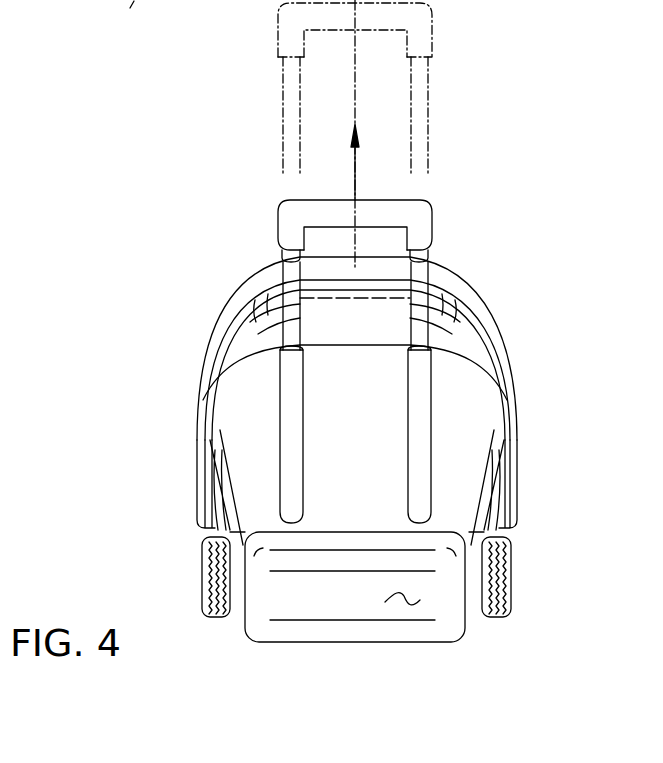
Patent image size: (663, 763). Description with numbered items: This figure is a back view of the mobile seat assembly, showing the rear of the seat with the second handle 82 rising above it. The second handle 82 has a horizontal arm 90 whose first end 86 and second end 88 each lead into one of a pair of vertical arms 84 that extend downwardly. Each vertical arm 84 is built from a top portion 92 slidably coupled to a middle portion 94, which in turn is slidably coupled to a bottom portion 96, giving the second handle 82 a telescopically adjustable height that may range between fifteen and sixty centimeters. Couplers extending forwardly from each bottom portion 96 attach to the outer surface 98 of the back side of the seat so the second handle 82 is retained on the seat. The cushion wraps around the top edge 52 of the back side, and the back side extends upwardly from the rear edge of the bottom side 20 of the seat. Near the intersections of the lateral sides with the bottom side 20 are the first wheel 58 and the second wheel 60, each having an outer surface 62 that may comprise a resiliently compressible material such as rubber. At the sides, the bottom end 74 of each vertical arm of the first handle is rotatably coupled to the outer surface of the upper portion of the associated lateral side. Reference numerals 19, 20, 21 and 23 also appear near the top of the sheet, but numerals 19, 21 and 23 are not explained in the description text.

The base housing 19 is at (352, 620).
The bottom side 20 is at (242, 28).
The handle portion 21 is at (291, 28).
The handle grip 23 is at (270, 88).
The top edge 52 is at (330, 348).
The first one of the pair of wheels 58 is at (511, 605).
The second one of the pair of wheels 60 is at (200, 548).
The outer surface 62 is at (205, 595).
The bottom end 74 is at (197, 496).
The second handle 82 is at (387, 192).
The pair of vertical arms 84 is at (281, 275).
The first end 86 is at (436, 241).
The second end 88 is at (280, 200).
The horizontal arm 90 is at (382, 200).
The top portion 92 is at (282, 252).
The middle portion 94 is at (280, 350).
The bottom portion 96 is at (290, 432).
The outer surface 98 is at (404, 600).